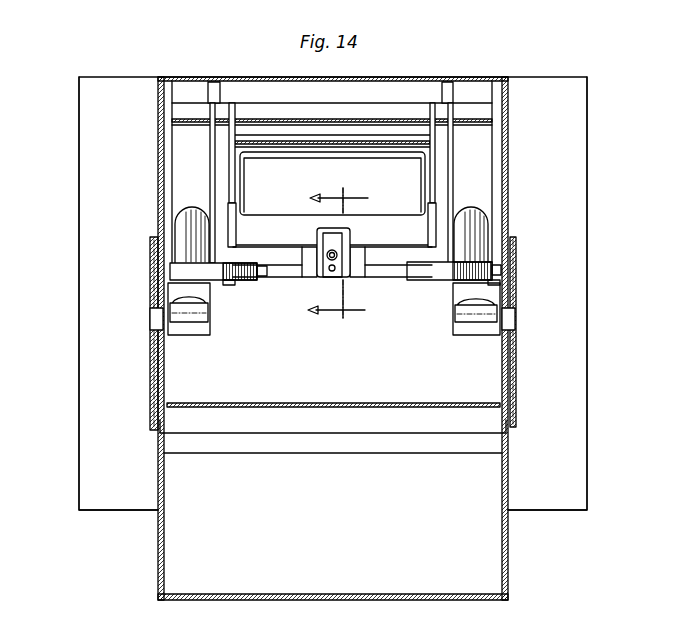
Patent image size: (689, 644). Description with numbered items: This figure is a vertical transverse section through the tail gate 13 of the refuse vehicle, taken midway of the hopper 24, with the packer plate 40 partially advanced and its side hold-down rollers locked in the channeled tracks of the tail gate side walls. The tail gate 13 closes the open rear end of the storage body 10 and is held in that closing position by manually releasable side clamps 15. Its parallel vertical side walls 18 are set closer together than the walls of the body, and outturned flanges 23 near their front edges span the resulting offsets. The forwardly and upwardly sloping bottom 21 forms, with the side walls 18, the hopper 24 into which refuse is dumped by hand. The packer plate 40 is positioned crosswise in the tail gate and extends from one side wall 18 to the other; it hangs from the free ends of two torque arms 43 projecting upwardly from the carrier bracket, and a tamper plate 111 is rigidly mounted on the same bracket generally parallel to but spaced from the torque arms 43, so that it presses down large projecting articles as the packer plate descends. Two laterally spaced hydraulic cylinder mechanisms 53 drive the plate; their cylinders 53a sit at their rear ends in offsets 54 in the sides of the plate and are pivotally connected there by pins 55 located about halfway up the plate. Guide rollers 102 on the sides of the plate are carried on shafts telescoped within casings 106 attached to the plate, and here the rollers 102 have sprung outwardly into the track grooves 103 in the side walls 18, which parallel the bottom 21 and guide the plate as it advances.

The storage body 10 is at (574, 368).
The tail gate 13 is at (150, 136).
The side clamps 15 is at (332, 254).
The side walls 18 is at (160, 383).
The bottom 21 is at (237, 591).
The outturned flanges 23 is at (95, 213).
The hopper 24 is at (345, 539).
The packer plate 40 is at (378, 402).
The torque arms 43 is at (208, 147).
The hydraulic cylinder mechanisms 53 is at (193, 199).
The cylinders 53a is at (183, 225).
The offsets 54 is at (205, 336).
The pins 55 is at (200, 312).
The guide rollers 102 is at (160, 270).
The track grooves 103 is at (150, 318).
The casings 106 is at (243, 282).
The tamper plate 111 is at (285, 170).